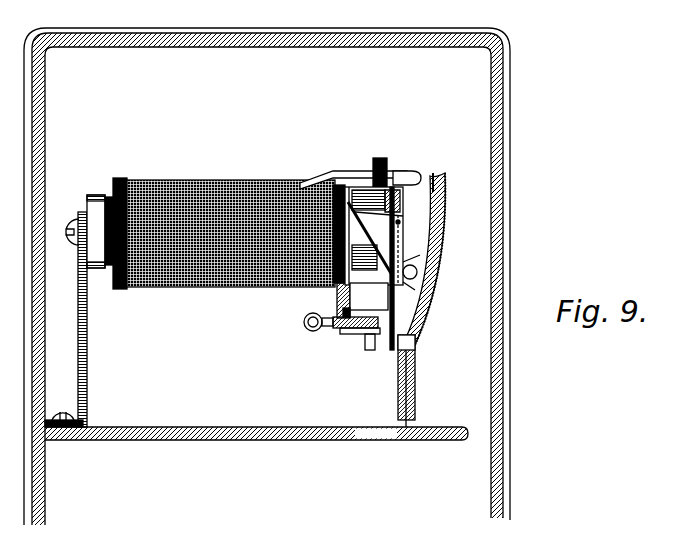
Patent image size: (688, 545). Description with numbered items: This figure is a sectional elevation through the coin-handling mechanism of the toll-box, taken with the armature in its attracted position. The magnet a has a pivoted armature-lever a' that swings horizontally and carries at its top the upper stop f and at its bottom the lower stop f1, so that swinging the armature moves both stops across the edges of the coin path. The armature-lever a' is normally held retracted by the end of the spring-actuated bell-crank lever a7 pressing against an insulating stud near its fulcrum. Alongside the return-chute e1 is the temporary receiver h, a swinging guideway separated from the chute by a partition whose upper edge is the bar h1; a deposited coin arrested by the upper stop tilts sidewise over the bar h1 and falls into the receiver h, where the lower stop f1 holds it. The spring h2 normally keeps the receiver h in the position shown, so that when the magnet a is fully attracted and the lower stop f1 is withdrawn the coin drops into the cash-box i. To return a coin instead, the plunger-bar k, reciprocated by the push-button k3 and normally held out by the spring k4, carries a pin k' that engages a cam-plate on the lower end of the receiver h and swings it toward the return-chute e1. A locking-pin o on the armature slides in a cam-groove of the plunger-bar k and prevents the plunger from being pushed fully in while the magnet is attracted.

The magnet a is at (225, 220).
The armature-lever a' is at (374, 268).
The bell-crank lever a7 is at (360, 163).
The upper stop f is at (421, 178).
The lower stop f1 is at (369, 296).
The temporary receiver h is at (400, 232).
The bar h1 is at (403, 200).
The spring h2 is at (420, 288).
The return-chute e1 is at (416, 356).
The cash-box i is at (256, 451).
The locking-pin o is at (342, 313).
The plunger-bar k is at (343, 350).
The pin k' is at (368, 360).
The push-button k3 is at (358, 334).
The spring k4 is at (306, 330).